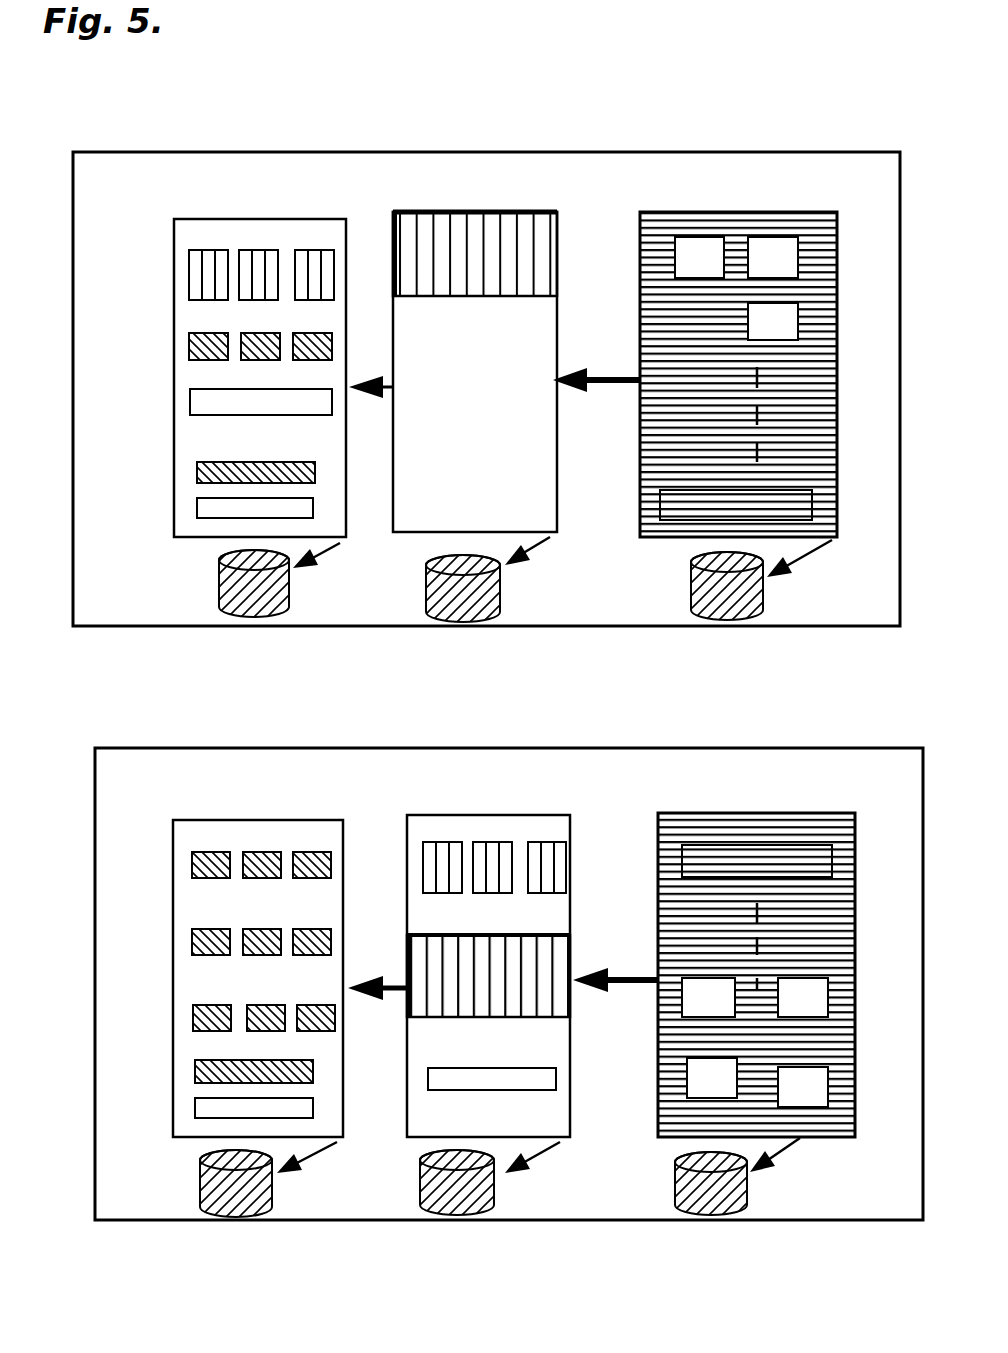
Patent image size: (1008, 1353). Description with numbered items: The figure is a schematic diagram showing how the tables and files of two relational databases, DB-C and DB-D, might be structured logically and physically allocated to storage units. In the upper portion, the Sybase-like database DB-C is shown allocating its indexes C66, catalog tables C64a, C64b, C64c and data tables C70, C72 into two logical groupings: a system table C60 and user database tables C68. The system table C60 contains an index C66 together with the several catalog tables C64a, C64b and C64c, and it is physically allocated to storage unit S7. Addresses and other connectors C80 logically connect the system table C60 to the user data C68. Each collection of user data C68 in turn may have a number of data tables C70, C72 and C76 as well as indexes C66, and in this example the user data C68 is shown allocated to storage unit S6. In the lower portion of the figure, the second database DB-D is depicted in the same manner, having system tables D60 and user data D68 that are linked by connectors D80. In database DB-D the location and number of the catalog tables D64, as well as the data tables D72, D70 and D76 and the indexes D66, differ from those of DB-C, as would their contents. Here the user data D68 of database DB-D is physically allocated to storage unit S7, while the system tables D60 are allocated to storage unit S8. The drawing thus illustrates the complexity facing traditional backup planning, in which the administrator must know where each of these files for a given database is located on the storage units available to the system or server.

The relational database DB-C is at (425, 152).
The second relational database DB-D is at (455, 748).
The user database tables C68 is at (229, 219).
The data table C70 is at (169, 255).
The data table C72 is at (166, 333).
The index C66 is at (166, 390).
The data table C76 is at (166, 462).
The system table C60 is at (800, 212).
The catalog table C64a is at (802, 273).
The catalog table C64b is at (670, 278).
The catalog table C64c is at (790, 328).
The addresses and other connectors C80 is at (362, 378).
The storage unit S6 is at (219, 593).
The storage unit S7 is at (691, 605).
The storage unit S8 is at (675, 1213).
The user data D68 is at (255, 820).
The data table D70 is at (400, 890).
The data table D72 is at (170, 852).
The data table D76 is at (166, 1060).
The index D66 is at (166, 1098).
The addresses and other connectors D80 is at (367, 983).
The system tables D60 is at (812, 795).
The catalog tables D64 is at (685, 1008).